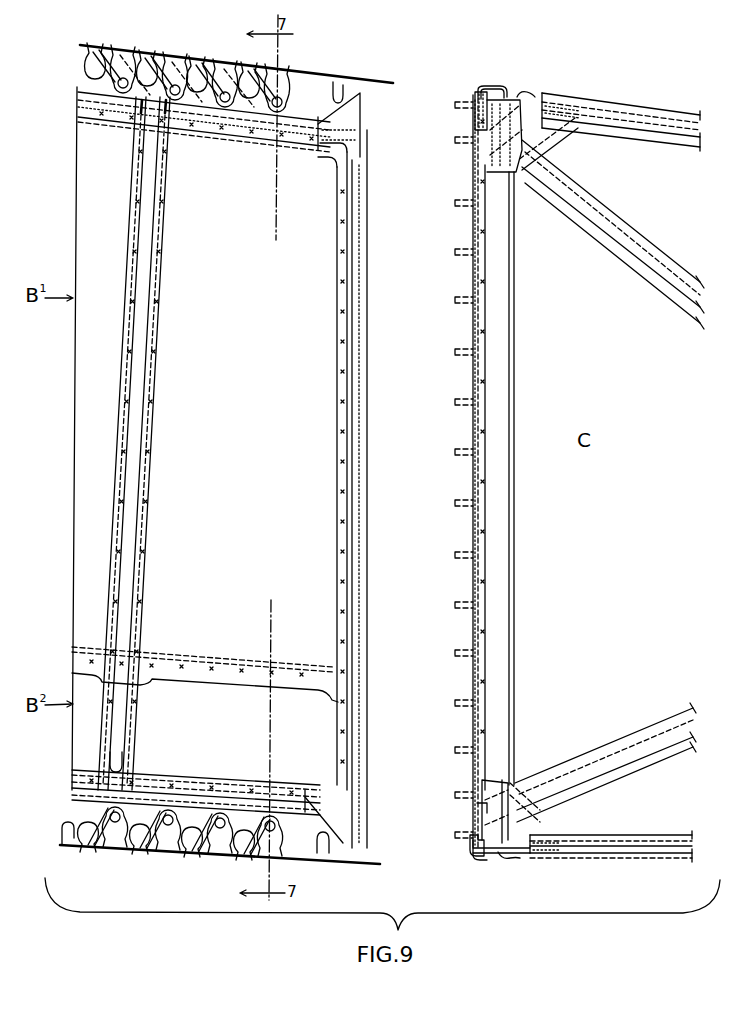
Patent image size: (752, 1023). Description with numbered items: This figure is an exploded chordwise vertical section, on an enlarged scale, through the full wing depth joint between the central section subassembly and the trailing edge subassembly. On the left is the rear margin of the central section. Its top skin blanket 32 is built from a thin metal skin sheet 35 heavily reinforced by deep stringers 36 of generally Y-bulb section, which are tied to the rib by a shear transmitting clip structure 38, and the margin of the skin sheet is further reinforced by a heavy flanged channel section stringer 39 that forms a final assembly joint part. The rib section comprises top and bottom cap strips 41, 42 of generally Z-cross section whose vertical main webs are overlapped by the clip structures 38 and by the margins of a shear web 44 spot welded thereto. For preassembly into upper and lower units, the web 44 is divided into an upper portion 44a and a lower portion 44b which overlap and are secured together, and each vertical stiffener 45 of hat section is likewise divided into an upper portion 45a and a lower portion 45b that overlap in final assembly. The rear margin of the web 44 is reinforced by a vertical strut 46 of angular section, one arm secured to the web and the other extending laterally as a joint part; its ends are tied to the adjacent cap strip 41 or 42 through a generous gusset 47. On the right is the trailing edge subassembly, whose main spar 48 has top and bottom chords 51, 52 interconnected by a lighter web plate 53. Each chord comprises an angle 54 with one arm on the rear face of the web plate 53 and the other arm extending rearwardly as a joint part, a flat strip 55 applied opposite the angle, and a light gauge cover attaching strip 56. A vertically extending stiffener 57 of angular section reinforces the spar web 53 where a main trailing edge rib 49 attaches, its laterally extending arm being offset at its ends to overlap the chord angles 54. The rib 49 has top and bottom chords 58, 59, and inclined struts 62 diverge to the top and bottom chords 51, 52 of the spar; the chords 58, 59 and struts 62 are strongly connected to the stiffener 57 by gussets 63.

The top skin blanket 32 is at (162, 66).
The skin sheet 35 is at (193, 100).
The stringers 36 is at (270, 68).
The clip structure 38 is at (125, 55).
The flanged channel section stringer 39 is at (331, 90).
The top cap strip 41 is at (284, 96).
The bottom cap strip 42 is at (222, 782).
The shear web 44 is at (230, 431).
The upper portion of web 44a is at (242, 554).
The lower portion of web 44b is at (203, 727).
The vertical stiffener 45 is at (127, 377).
The upper portion of stiffener 45a is at (116, 560).
The lower portion of stiffener 45b is at (96, 772).
The vertical strut 46 is at (342, 410).
The gusset 47 is at (342, 118).
The main spar 48 is at (488, 419).
The main trailing edge rib 49 is at (612, 249).
The top chord 51 is at (486, 82).
The bottom chord 52 is at (474, 858).
The web plate 53 is at (474, 480).
The angle 54 is at (475, 137).
The flat strip 55 is at (476, 95).
The cover attaching strip 56 is at (518, 95).
The vertical stiffener 57 is at (500, 560).
The top chord 58 is at (618, 113).
The bottom chord 59 is at (621, 861).
The inclined struts 62 is at (628, 236).
The gussets 63 is at (556, 138).